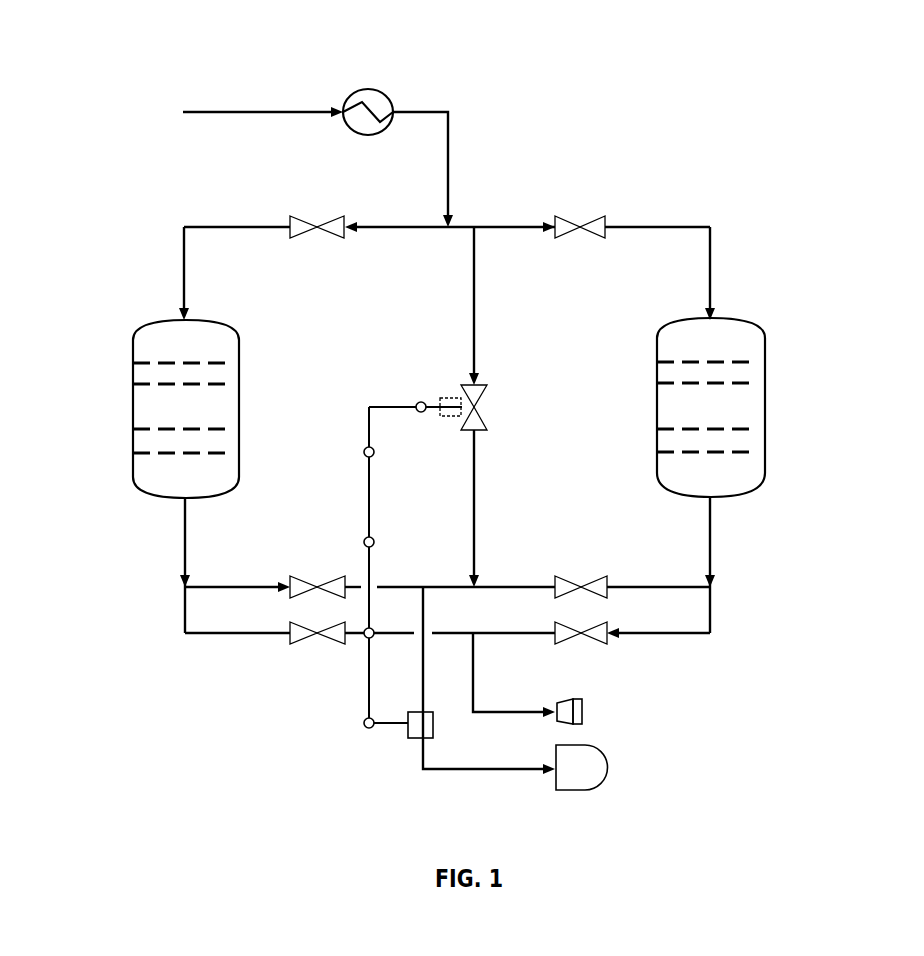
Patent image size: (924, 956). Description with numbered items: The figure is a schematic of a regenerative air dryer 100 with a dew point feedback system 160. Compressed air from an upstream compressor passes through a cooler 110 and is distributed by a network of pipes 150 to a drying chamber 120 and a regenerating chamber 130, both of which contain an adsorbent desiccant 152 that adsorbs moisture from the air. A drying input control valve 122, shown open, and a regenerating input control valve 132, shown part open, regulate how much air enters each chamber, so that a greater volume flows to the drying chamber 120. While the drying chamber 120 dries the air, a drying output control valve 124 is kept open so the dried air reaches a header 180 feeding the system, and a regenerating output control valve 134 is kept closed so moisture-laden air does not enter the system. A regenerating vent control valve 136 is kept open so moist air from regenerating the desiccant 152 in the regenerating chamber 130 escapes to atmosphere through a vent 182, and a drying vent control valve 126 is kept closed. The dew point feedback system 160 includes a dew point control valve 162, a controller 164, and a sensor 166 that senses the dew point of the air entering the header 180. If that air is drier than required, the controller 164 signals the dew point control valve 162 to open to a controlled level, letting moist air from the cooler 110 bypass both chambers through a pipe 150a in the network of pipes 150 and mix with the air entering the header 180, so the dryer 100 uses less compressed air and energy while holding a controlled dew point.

The regenerative air dryer 100 is at (723, 115).
The cooler 110 is at (375, 102).
The drying chamber 120 is at (137, 325).
The drying input control valve 122 is at (305, 222).
The drying output control valve 124 is at (295, 583).
The drying vent control valve 126 is at (297, 636).
The regenerating chamber 130 is at (752, 318).
The regenerating input control valve 132 is at (592, 222).
The regenerating output control valve 134 is at (600, 583).
The regenerating vent control valve 136 is at (598, 636).
The network of pipes 150 is at (715, 262).
The pipe 150a is at (478, 520).
The adsorbent desiccant 152 is at (195, 455).
The dew point feedback system 160 is at (495, 355).
The dew point control valve 162 is at (466, 387).
The controller 164 is at (448, 412).
The sensor 166 is at (412, 733).
The header 180 is at (585, 770).
The vent 182 is at (572, 703).